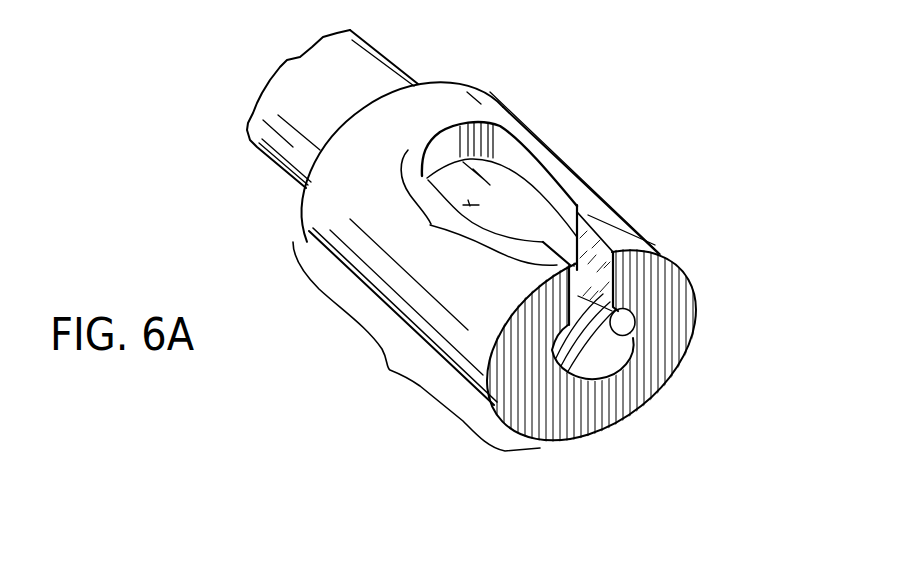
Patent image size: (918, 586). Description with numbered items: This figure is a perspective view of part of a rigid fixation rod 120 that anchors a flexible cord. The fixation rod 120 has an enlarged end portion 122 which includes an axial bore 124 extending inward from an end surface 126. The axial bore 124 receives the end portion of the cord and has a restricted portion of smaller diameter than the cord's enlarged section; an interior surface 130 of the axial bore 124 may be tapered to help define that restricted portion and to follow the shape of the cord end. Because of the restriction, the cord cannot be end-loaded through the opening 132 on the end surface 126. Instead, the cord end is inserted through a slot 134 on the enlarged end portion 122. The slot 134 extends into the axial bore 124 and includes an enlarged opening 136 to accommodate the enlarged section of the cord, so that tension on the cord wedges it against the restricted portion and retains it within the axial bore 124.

The fixation rod 120 is at (679, 221).
The enlarged end portion 122 is at (397, 378).
The axial bore 124 is at (573, 331).
The end surface 126 is at (634, 381).
The interior surface 130 is at (468, 202).
The opening 132 is at (614, 320).
The slot 134 is at (436, 232).
The enlarged opening 136 is at (578, 211).